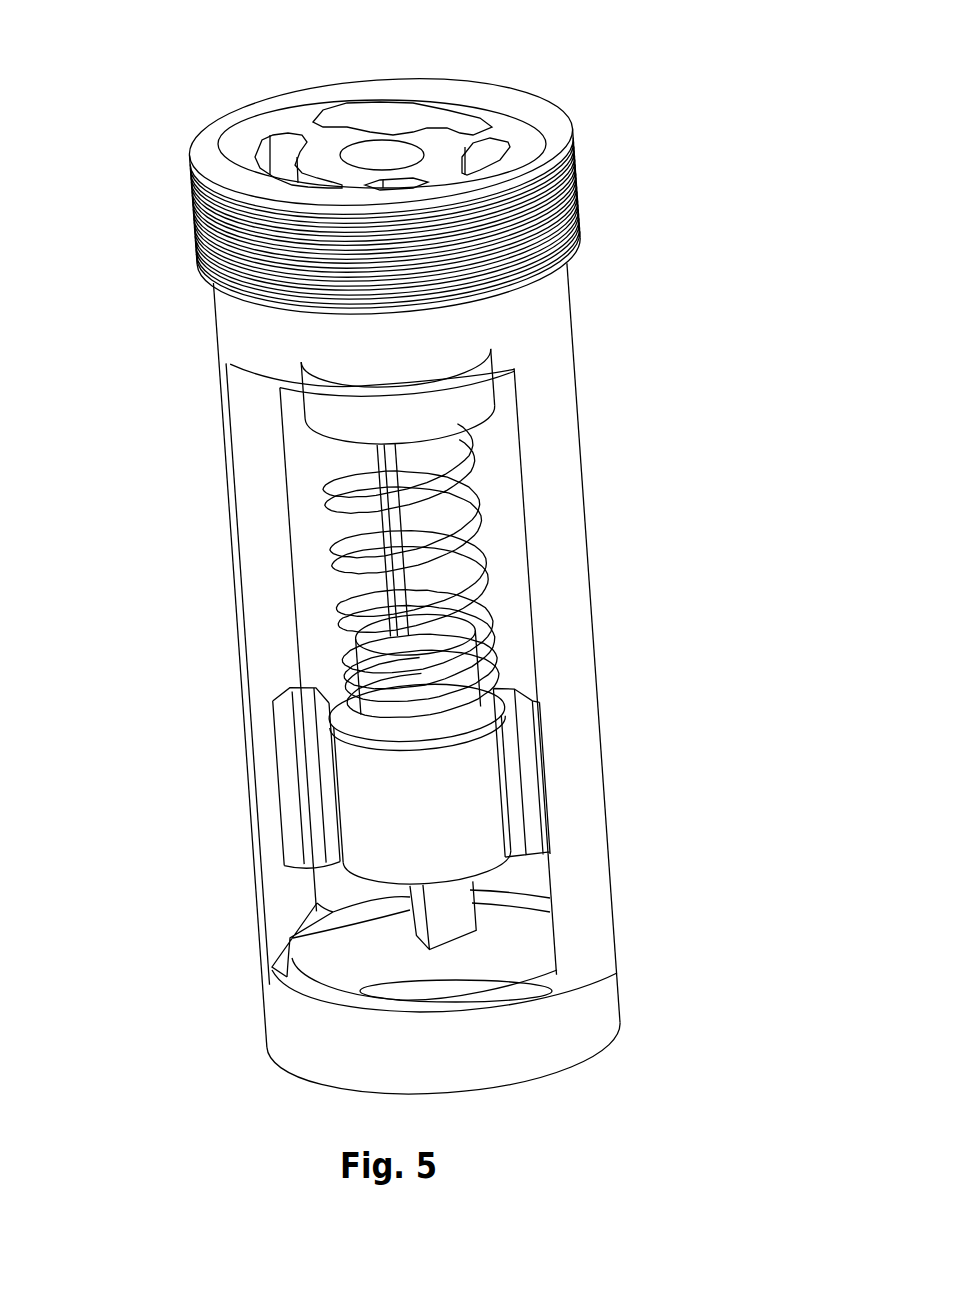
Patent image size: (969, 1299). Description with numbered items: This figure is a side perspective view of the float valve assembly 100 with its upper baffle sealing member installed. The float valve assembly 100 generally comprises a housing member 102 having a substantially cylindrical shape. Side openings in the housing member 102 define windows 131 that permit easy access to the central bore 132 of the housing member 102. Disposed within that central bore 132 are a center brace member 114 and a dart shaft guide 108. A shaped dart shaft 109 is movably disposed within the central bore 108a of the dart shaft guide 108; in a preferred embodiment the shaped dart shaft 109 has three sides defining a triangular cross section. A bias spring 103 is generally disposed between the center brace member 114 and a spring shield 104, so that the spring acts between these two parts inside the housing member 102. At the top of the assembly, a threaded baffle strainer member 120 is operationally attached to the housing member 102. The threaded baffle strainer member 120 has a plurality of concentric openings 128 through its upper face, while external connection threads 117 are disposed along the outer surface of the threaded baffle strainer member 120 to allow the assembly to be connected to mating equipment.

The float valve assembly 100 is at (410, 553).
The housing member 102 is at (386, 681).
The bias spring 103 is at (485, 566).
The spring shield 104 is at (470, 400).
The dart shaft guide 108 is at (394, 780).
The central bore of dart shaft guide 108a is at (357, 628).
The shaped dart shaft 109 is at (335, 520).
The center brace member 114 is at (457, 813).
The external connection threads 117 is at (578, 201).
The threaded baffle strainer member 120 is at (403, 109).
The concentric openings 128 is at (366, 157).
The windows 131 is at (518, 489).
The central bore 132 is at (480, 997).